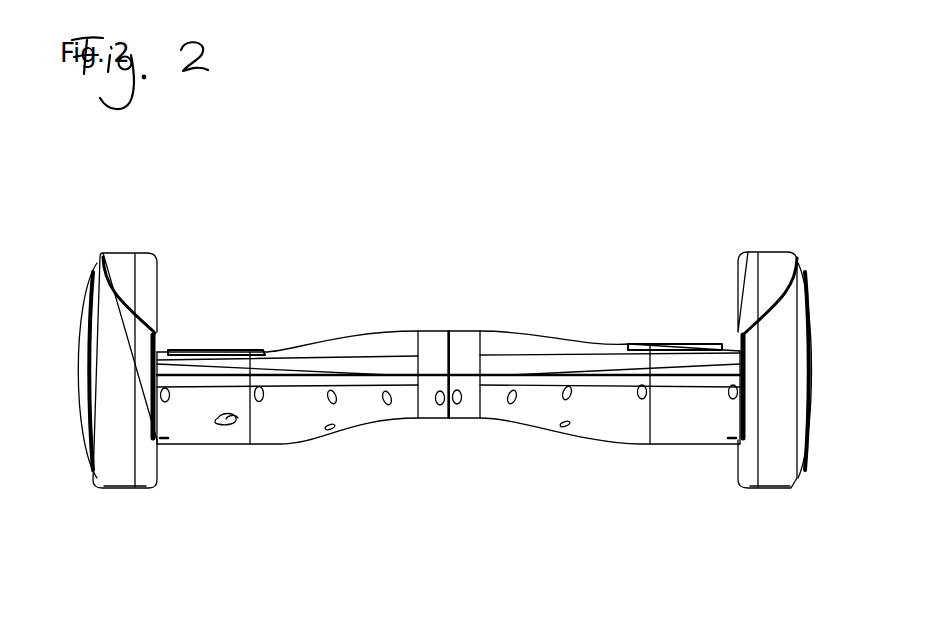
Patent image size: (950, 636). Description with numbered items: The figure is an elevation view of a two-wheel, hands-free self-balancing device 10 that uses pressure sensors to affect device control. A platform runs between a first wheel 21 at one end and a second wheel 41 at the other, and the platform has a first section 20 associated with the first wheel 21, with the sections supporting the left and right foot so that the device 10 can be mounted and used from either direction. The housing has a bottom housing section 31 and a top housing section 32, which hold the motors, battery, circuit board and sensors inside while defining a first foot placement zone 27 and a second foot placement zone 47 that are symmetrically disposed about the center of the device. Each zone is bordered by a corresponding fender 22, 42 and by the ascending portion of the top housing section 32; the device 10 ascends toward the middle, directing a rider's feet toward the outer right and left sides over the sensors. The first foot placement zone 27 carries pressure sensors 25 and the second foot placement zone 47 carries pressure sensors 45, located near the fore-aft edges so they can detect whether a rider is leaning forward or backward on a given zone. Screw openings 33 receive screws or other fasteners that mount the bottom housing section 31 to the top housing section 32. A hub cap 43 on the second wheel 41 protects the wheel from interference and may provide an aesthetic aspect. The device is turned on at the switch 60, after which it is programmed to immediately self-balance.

The two-wheel, hands-free self-balancing device 10 is at (632, 140).
The first section 20 is at (614, 242).
The first wheel 21 is at (772, 480).
The fender 22 is at (776, 250).
The pressure sensors 25 is at (690, 340).
The first foot placement zone 27 is at (733, 212).
The bottom housing section 31 is at (290, 430).
The top housing section 32 is at (508, 332).
The screw openings 33 is at (393, 402).
The second wheel 41 is at (118, 492).
The fender 42 is at (118, 250).
The hub cap 43 is at (80, 380).
The pressure sensors 45 is at (240, 350).
The second foot placement zone 47 is at (190, 222).
The switch 60 is at (235, 440).